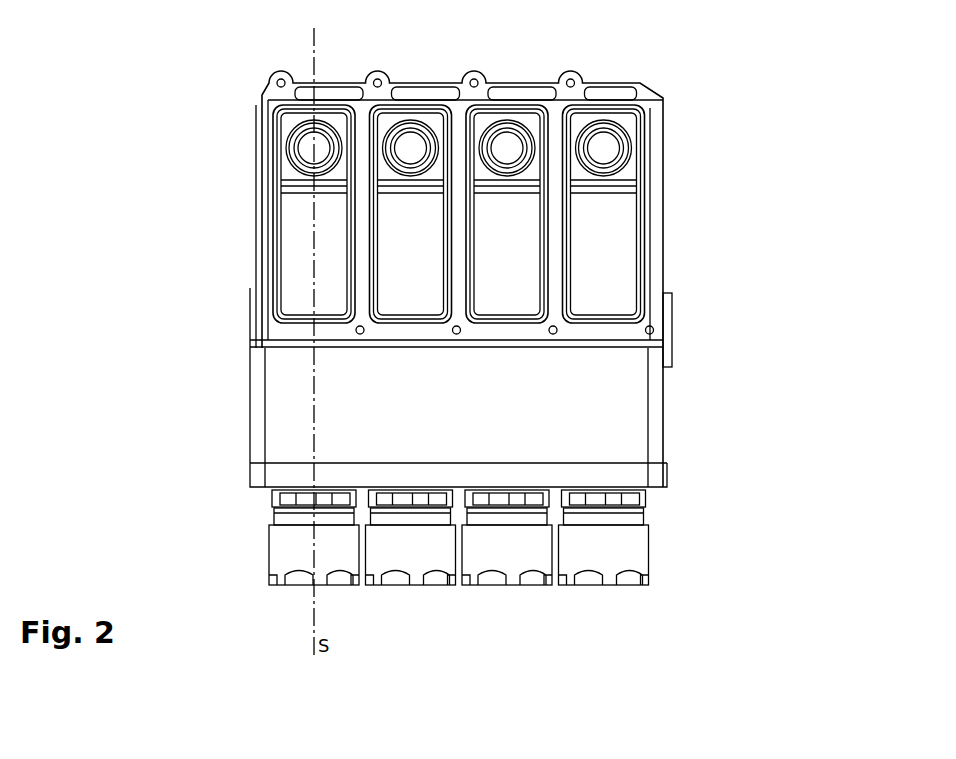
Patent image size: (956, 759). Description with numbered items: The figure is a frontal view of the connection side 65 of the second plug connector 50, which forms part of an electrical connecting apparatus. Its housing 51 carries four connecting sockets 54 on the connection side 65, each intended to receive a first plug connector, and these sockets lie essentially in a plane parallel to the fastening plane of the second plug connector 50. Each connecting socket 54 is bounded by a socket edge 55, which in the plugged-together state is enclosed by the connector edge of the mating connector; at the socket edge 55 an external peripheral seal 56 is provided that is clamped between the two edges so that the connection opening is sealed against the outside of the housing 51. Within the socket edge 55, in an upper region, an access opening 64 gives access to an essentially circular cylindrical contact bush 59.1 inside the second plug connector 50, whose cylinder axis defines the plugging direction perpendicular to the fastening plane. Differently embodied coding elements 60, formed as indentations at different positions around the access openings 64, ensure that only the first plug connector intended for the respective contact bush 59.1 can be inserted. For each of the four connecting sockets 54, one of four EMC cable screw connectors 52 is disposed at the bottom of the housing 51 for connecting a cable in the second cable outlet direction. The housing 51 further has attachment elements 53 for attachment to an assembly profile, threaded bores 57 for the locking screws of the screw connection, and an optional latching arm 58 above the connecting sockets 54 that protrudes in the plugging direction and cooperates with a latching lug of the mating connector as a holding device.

The second plug connector 50 is at (688, 389).
The housing 51 is at (283, 423).
The EMC cable screw connectors 52 is at (278, 547).
The attachment elements 53 is at (668, 308).
The connecting sockets 54 is at (603, 217).
The socket edge 55 is at (273, 272).
The external peripheral seal 56 is at (273, 300).
The threaded bores 57 is at (282, 87).
The latching arm 58 is at (318, 78).
The contact bush 59.1 is at (293, 157).
The coding elements 60 is at (330, 125).
The access opening 64 is at (296, 150).
The connection side 65 is at (550, 250).